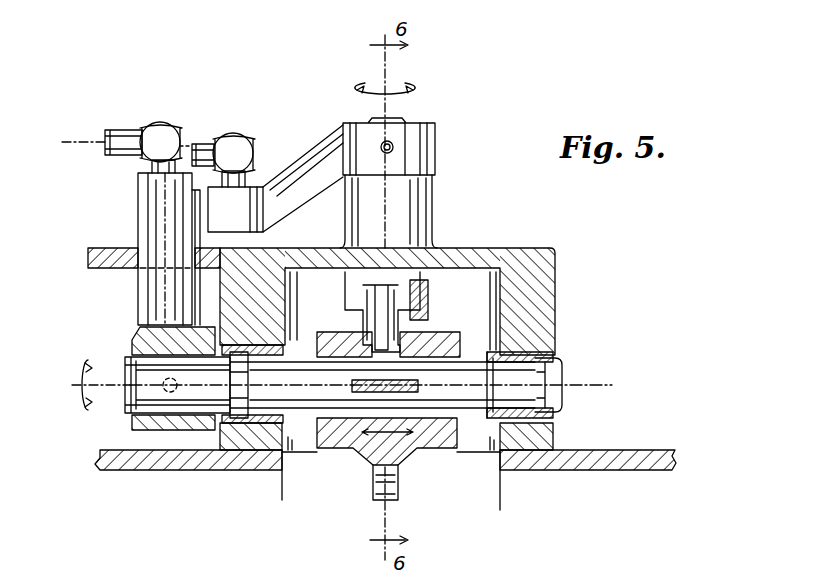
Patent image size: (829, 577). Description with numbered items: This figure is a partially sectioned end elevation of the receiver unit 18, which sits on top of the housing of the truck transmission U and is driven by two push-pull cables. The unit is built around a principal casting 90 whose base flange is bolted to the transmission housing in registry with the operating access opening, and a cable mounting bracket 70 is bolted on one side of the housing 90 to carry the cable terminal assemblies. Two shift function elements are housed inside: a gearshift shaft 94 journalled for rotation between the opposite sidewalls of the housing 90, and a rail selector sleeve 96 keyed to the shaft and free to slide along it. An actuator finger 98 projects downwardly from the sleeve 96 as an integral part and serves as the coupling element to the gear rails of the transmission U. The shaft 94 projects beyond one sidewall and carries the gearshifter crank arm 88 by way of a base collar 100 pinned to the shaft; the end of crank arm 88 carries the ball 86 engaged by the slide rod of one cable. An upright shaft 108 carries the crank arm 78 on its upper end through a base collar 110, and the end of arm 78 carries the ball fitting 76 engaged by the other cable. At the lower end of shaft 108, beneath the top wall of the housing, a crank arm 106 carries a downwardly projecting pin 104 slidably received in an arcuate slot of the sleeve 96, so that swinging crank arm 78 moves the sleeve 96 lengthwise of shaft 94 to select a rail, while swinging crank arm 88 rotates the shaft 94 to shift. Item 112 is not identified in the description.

The mounting bracket 70 is at (108, 248).
The ball fitting 76 is at (235, 132).
The crank arm 78 is at (305, 160).
The ball 86 is at (157, 122).
The crank arm 88 is at (140, 189).
The principal casting 90 is at (557, 307).
The gearshift shaft 94 is at (477, 410).
The rail selector sleeve 96 is at (342, 432).
The actuator finger 98 is at (373, 500).
The base collar 100 is at (133, 344).
The pin 104 is at (428, 337).
The crank arm 106 is at (372, 299).
The upright shaft 108 is at (438, 150).
The base collar 110 is at (424, 122).
The cylinder 112 is at (432, 200).
The receiver unit 18 is at (524, 232).
The truck transmission U is at (610, 452).